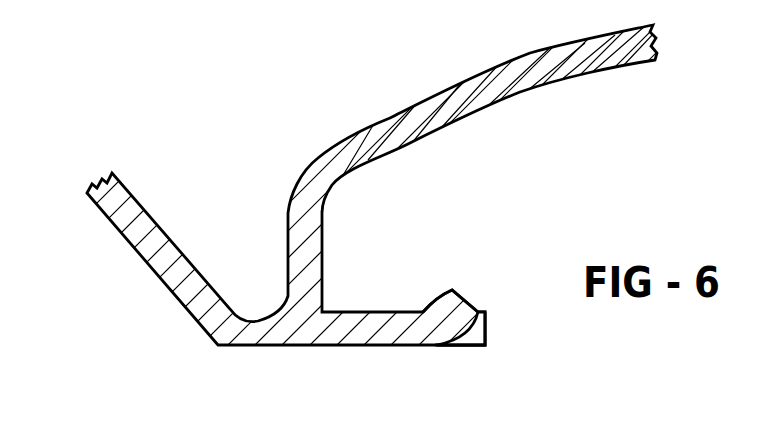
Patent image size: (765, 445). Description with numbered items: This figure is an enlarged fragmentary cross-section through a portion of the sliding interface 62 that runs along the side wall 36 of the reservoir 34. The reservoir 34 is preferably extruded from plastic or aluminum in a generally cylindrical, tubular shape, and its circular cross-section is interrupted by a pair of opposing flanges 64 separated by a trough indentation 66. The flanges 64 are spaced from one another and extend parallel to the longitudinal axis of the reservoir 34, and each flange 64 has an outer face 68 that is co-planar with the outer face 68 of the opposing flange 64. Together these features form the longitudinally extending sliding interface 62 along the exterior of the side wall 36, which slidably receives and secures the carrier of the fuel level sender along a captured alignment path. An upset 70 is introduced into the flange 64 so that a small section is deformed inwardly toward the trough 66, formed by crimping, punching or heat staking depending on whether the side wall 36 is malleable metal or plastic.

The reservoir 34 is at (103, 214).
The peripheral side wall 36 is at (135, 264).
The sliding interface 62 is at (487, 346).
The flange 64 is at (486, 328).
The trough indentation 66 is at (572, 78).
The outer face 68 is at (415, 346).
The upset 70 is at (470, 303).